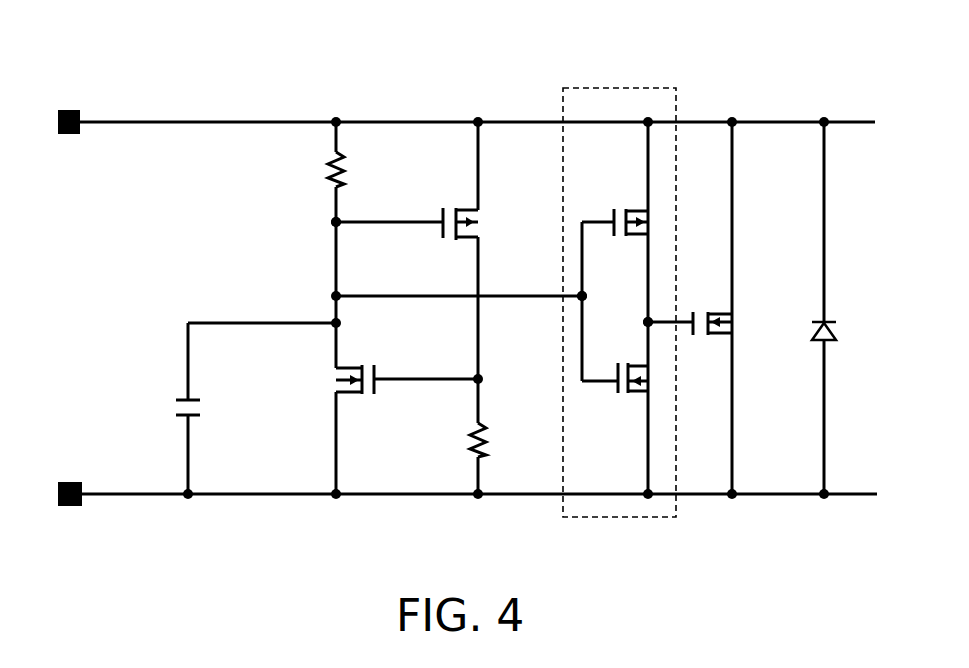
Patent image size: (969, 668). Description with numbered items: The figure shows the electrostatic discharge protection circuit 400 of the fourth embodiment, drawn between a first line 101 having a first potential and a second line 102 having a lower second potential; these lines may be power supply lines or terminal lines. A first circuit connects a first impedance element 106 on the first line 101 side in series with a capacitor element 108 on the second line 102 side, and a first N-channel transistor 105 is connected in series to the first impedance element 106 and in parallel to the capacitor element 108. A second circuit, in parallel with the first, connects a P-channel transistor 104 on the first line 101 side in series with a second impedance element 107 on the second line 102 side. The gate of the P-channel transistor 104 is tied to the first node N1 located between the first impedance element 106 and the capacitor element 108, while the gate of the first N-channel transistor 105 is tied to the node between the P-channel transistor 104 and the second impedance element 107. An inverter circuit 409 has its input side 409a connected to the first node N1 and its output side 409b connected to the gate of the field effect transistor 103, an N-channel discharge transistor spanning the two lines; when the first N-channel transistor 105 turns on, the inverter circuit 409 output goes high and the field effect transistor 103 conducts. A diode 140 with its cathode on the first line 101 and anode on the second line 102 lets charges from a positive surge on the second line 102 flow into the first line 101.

The first line 101 is at (78, 110).
The second line 102 is at (82, 508).
The field effect transistor 103 is at (743, 315).
The P-channel transistor 104 is at (488, 222).
The first N-channel transistor 105 is at (359, 403).
The first impedance element 106 is at (352, 158).
The second impedance element 107 is at (493, 452).
The capacitor element 108 is at (209, 416).
The diode 140 is at (837, 330).
The electrostatic discharge protection circuit 400 is at (712, 70).
The inverter circuit 409 is at (617, 520).
The input side 409a is at (578, 295).
The output side 409b is at (653, 316).
The first node N1 is at (331, 222).